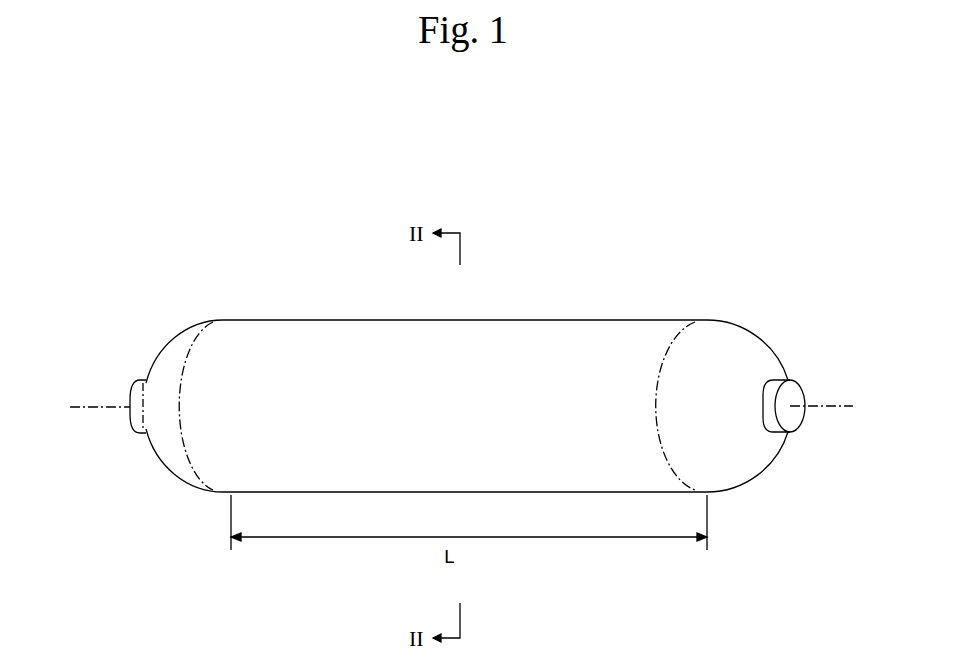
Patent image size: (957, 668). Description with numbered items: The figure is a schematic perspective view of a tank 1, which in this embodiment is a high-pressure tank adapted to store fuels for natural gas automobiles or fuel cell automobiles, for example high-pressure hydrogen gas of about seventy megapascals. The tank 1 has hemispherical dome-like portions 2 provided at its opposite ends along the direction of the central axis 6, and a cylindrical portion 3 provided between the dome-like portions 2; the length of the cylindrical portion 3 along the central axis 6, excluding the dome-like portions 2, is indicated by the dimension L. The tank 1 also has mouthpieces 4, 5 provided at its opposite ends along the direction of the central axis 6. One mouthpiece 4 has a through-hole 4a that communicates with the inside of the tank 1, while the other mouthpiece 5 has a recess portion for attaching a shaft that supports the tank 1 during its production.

The tank 1 is at (636, 196).
The dome-like portions 2 is at (173, 350).
The cylindrical portion 3 is at (342, 333).
The mouthpiece 4 is at (805, 387).
The through-hole 4a is at (795, 417).
The mouthpiece 5 is at (135, 387).
The central axis 6 is at (843, 405).